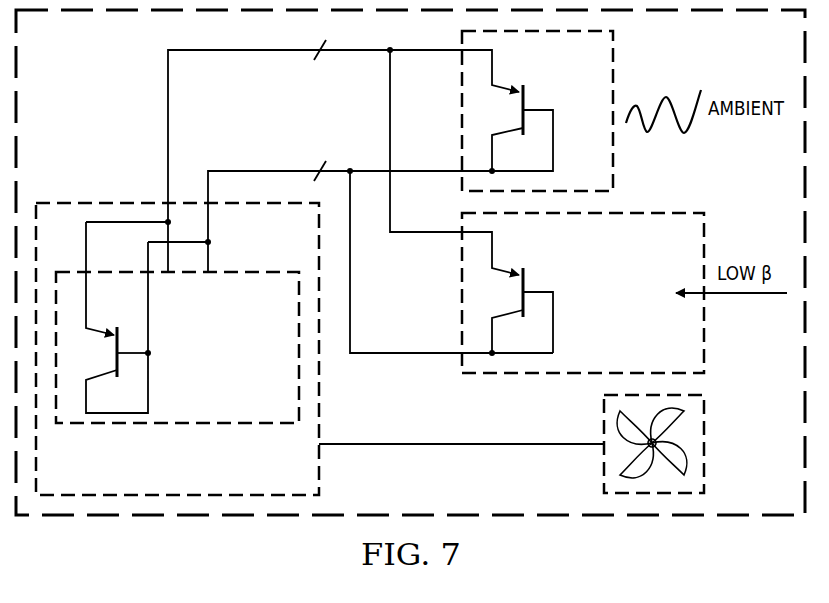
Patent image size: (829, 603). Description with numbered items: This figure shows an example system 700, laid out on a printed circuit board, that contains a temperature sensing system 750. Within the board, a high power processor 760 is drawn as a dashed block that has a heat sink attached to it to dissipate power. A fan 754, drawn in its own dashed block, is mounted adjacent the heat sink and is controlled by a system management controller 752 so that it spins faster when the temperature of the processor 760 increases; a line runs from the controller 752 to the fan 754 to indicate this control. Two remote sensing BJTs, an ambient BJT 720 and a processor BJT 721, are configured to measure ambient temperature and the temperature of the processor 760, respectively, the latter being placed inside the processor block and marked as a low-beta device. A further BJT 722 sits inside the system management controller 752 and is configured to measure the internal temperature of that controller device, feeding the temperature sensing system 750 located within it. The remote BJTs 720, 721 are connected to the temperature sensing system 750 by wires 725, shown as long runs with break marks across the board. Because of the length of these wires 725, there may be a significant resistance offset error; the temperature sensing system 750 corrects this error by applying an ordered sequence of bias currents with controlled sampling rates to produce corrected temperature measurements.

The system 700 is at (557, 519).
The system management controller 752 is at (116, 200).
The temperature sensing system 750 is at (241, 378).
The BJT 722 is at (121, 350).
The wires 725 is at (420, 233).
The remote sensing BJT 720 is at (526, 98).
The processor 760 is at (704, 343).
The remote sensing BJT 721 is at (528, 282).
The fan 754 is at (704, 467).